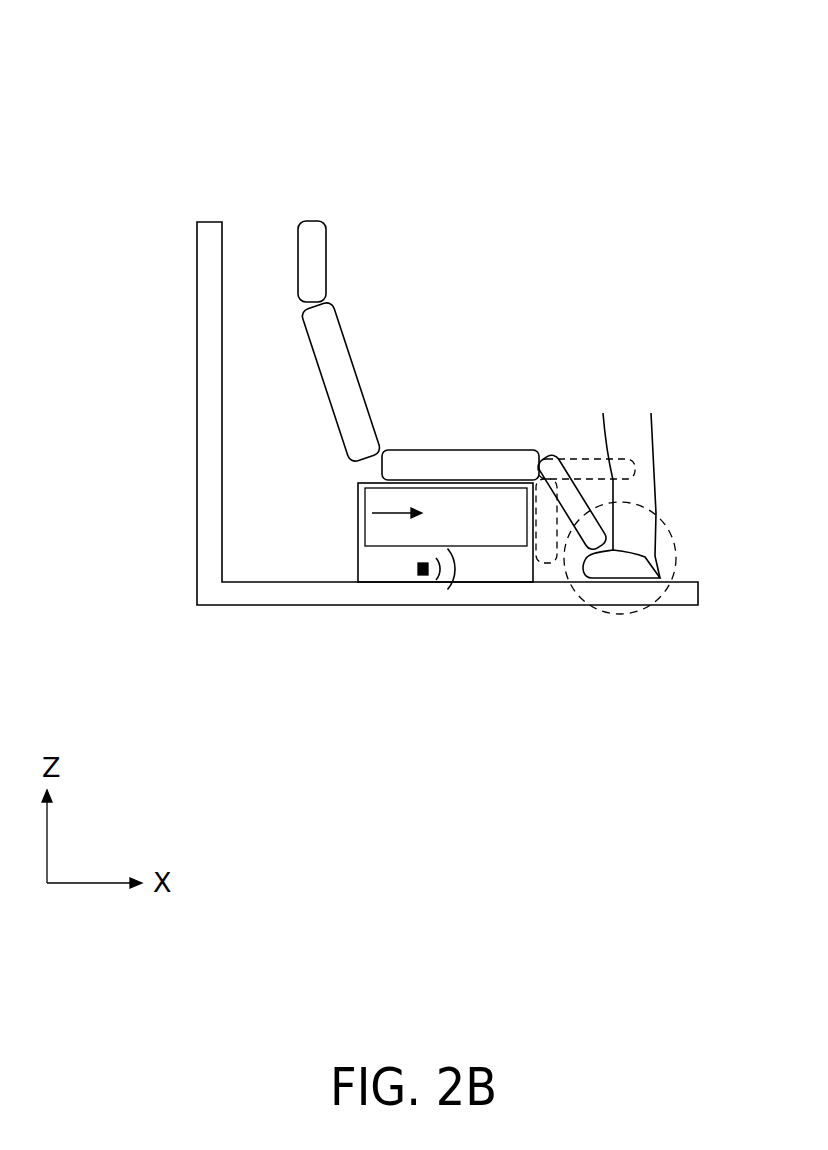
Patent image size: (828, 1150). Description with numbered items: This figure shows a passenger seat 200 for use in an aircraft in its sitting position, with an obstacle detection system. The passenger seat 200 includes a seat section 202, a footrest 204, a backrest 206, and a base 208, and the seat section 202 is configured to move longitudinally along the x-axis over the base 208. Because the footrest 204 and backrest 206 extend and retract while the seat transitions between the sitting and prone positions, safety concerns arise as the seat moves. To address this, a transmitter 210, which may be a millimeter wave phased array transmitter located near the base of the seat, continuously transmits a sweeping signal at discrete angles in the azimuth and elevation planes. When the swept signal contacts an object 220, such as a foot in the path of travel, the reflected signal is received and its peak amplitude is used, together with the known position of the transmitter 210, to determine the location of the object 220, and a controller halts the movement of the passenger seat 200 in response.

The passenger seat 200 is at (186, 112).
The seat section 202 is at (460, 450).
The footrest 204 is at (570, 463).
The backrest 206 is at (326, 240).
The base 208 is at (358, 563).
The transmitter 210 is at (418, 572).
The object 220 is at (645, 580).